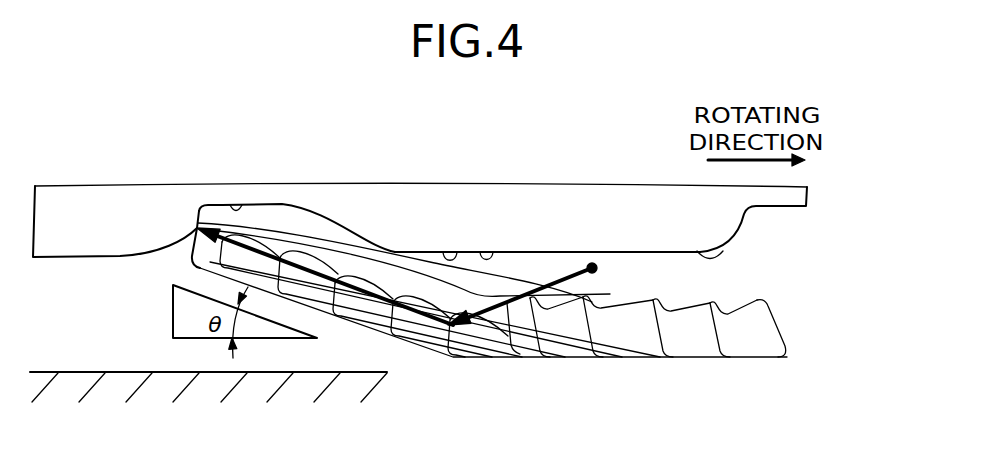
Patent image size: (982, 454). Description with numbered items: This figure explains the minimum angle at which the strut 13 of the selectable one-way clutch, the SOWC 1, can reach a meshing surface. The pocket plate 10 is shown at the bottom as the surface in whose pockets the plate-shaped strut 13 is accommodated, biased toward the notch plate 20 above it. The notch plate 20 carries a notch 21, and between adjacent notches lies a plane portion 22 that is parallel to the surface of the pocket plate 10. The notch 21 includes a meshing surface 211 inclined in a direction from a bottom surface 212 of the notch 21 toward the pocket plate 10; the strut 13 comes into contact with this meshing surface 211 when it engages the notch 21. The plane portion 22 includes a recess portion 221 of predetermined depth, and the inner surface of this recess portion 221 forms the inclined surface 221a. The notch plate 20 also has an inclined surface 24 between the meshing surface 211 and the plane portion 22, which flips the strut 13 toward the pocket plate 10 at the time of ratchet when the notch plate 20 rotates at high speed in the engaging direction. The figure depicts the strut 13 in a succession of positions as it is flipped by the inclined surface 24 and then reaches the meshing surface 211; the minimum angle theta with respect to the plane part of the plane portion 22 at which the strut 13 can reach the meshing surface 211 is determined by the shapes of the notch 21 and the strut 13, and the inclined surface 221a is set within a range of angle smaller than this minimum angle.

The SOWC 1 is at (92, 148).
The pocket plate 10 is at (85, 372).
The strut 13 is at (535, 382).
The notch plate 20 is at (833, 190).
The notch 21 is at (278, 185).
The meshing surface 211 is at (213, 205).
The bottom surface 212 is at (237, 206).
The plane portion 22 is at (449, 230).
The recess portion 221 is at (489, 252).
The inclined surface 221a is at (448, 252).
The inclined surface 24 is at (724, 255).